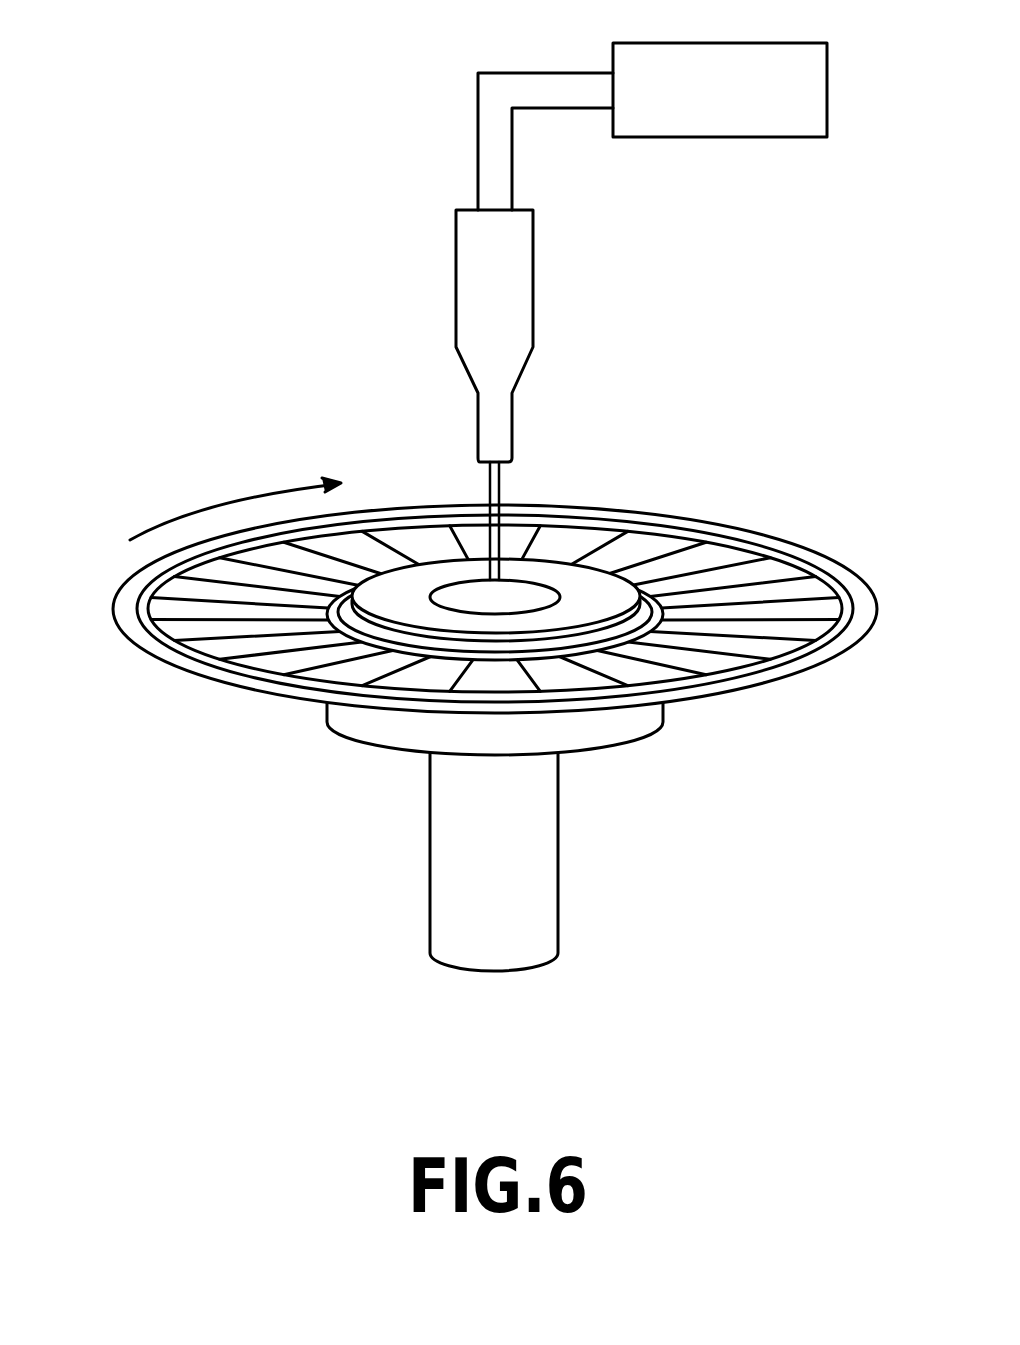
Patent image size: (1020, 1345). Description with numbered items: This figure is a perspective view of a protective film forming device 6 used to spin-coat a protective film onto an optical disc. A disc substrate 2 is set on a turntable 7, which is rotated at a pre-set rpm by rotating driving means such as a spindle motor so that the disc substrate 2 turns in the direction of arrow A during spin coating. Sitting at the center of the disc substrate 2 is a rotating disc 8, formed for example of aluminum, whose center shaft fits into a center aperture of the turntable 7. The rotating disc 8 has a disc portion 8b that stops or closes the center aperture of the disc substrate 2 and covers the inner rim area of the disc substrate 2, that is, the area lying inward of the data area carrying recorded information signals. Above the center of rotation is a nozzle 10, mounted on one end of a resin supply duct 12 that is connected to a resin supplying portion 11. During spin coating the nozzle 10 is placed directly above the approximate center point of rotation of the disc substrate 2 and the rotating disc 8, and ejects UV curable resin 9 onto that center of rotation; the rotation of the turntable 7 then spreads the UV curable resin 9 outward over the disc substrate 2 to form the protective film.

The disc substrate 2 is at (827, 560).
The protective film forming device 6 is at (514, 486).
The turntable 7 is at (530, 910).
The rotating disc 8 is at (633, 596).
The disc portion 8b is at (565, 615).
The UV curable resin 9 is at (488, 485).
The nozzle 10 is at (470, 255).
The resin supplying portion 11 is at (720, 113).
The resin supply duct 12 is at (498, 105).